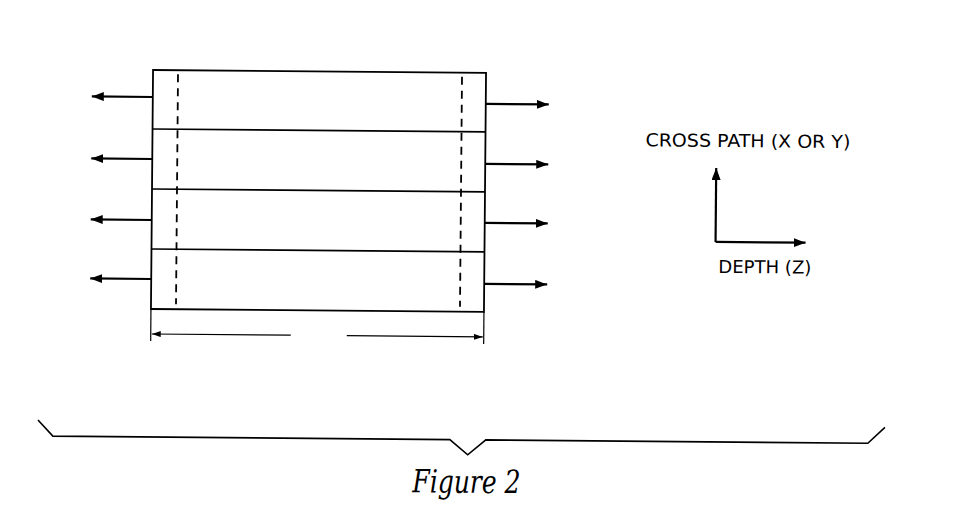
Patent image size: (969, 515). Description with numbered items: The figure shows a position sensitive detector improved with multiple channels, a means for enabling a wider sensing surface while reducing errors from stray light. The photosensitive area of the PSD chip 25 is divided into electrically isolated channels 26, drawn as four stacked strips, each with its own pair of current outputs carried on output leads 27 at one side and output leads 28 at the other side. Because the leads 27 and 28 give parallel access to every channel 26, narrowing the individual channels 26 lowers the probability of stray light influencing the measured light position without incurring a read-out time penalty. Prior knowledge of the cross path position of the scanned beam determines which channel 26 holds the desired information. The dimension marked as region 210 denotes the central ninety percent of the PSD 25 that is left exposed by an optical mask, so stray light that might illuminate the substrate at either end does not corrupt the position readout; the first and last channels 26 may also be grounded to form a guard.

The PSD chip 25 is at (360, 70).
The channels 26 is at (230, 85).
The output leads 27 is at (108, 95).
The output leads 28 is at (517, 100).
The region 210 is at (317, 329).